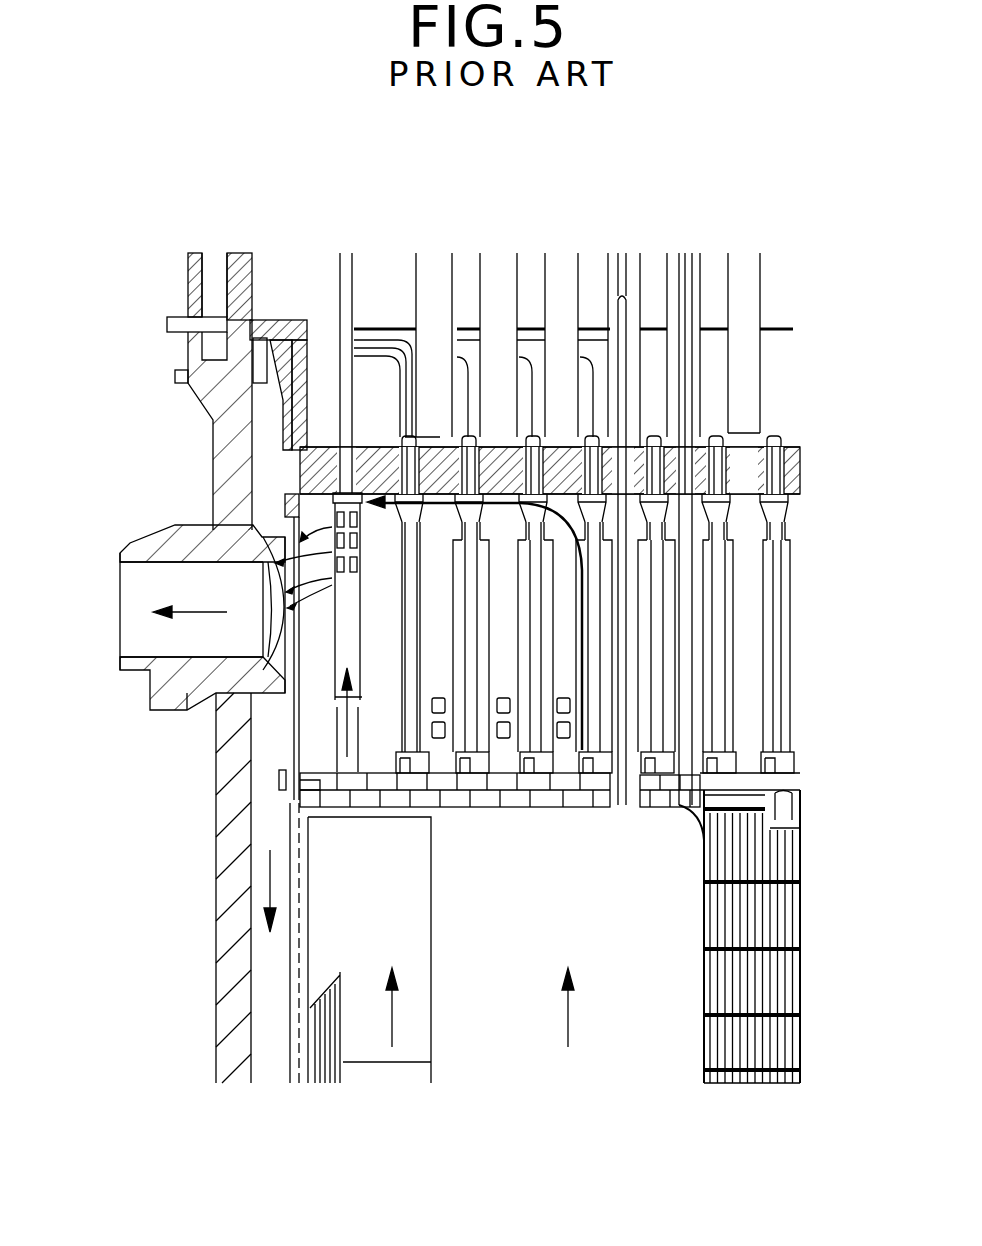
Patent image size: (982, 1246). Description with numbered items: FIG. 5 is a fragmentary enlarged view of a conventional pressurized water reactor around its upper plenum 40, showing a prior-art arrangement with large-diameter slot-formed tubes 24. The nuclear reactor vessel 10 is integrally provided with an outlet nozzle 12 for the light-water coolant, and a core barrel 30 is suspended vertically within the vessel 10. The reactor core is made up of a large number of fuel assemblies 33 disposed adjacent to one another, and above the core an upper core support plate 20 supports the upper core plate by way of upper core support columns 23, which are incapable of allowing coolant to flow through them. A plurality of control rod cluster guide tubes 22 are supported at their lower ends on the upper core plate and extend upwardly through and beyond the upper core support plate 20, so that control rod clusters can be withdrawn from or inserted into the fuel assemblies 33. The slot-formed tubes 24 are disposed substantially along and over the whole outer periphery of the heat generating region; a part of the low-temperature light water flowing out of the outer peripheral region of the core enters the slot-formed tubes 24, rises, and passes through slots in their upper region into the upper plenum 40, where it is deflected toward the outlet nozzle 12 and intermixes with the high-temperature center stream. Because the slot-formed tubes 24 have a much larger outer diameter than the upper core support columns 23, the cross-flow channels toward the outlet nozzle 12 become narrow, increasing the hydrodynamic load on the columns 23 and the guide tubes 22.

The nuclear reactor vessel 10 is at (242, 1047).
The outlet nozzle 12 is at (193, 540).
The upper core support plate 20 is at (322, 447).
The control rod cluster guide tube 22 is at (570, 648).
The upper core support column 23 is at (783, 617).
The slot-formed tube 24 is at (397, 803).
The core barrel 30 is at (287, 800).
The fuel assembly 33 is at (763, 913).
The upper plenum 40 is at (386, 567).